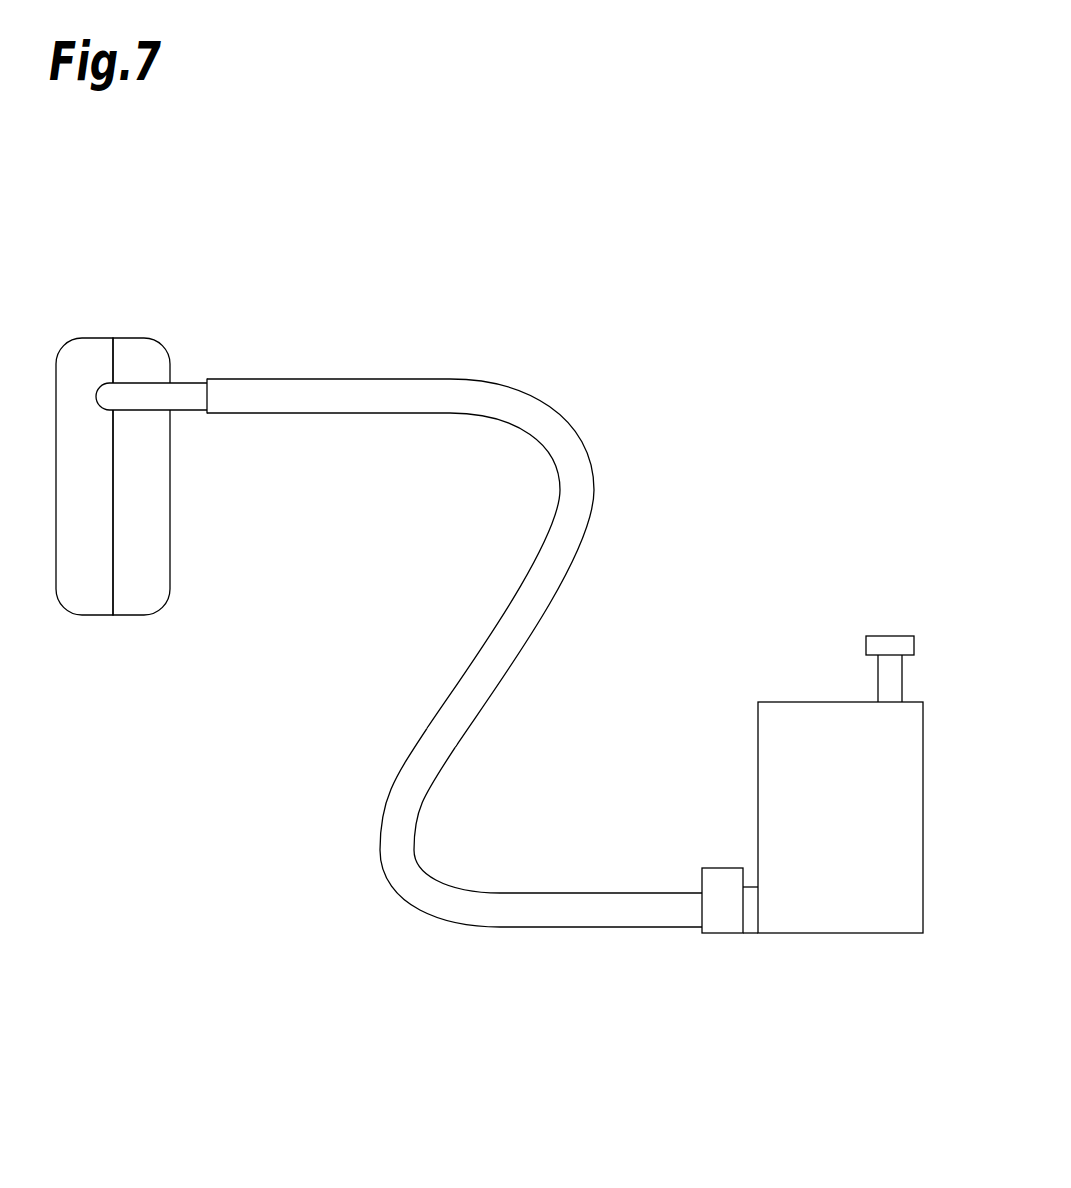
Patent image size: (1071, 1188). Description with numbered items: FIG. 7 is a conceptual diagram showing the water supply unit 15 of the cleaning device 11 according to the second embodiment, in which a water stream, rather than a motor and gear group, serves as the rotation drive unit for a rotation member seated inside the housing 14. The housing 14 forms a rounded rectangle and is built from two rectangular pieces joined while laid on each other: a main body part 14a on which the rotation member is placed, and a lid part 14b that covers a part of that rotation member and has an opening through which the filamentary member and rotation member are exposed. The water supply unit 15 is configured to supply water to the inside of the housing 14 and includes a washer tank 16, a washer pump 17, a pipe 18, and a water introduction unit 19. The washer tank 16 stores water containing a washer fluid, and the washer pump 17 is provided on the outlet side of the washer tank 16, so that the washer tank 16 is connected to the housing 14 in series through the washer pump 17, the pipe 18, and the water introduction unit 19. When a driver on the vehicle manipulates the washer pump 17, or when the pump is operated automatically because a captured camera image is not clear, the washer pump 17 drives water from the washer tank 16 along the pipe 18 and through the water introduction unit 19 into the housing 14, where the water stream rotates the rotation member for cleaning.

The cleaning device 11 is at (131, 493).
The housing 14 is at (117, 548).
The main body part 14a is at (142, 518).
The lid part 14b is at (83, 602).
The water supply unit 15 is at (457, 358).
The washer tank 16 is at (793, 725).
The washer pump 17 is at (722, 910).
The pipe 18 is at (508, 910).
The water introduction unit 19 is at (190, 397).